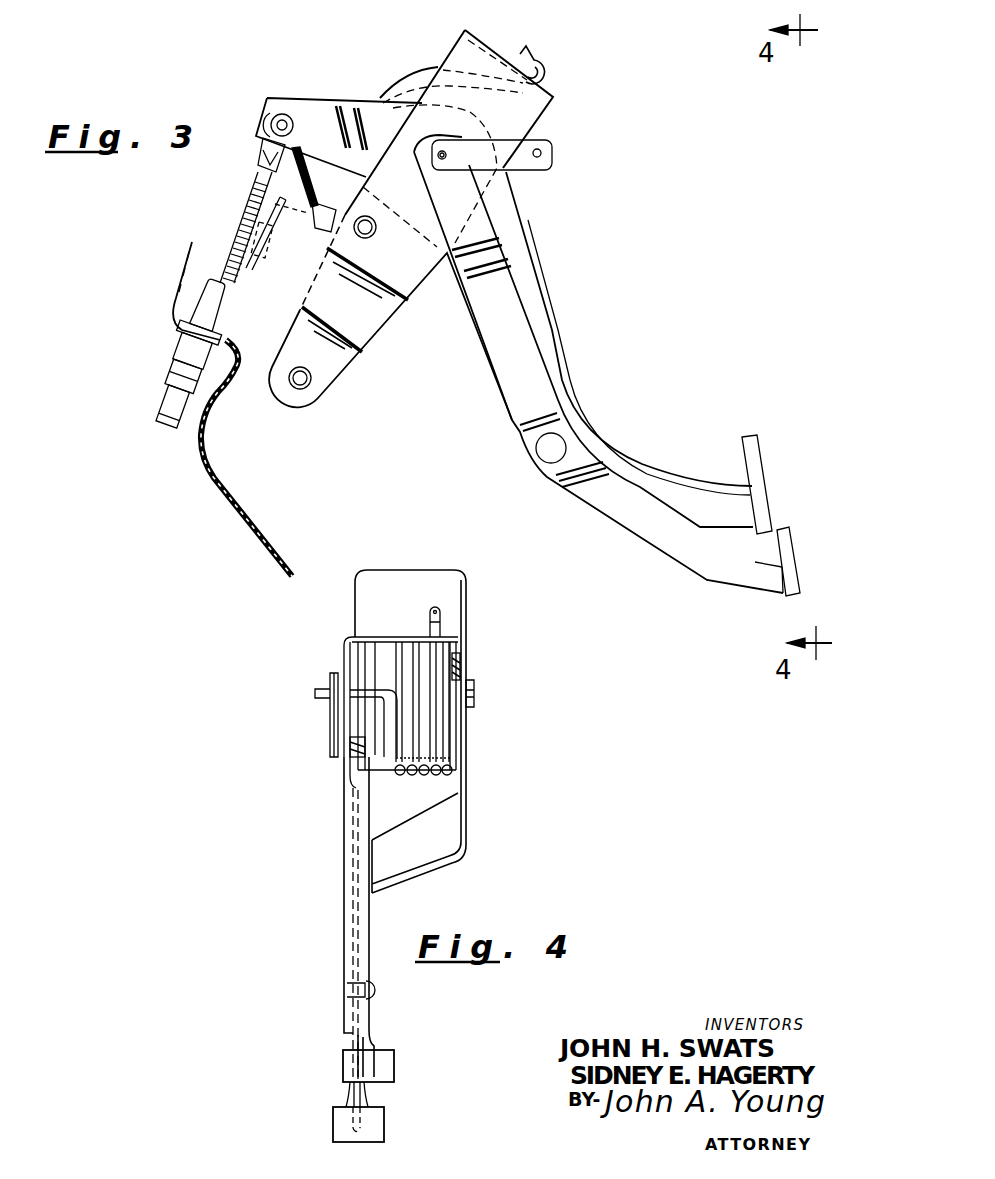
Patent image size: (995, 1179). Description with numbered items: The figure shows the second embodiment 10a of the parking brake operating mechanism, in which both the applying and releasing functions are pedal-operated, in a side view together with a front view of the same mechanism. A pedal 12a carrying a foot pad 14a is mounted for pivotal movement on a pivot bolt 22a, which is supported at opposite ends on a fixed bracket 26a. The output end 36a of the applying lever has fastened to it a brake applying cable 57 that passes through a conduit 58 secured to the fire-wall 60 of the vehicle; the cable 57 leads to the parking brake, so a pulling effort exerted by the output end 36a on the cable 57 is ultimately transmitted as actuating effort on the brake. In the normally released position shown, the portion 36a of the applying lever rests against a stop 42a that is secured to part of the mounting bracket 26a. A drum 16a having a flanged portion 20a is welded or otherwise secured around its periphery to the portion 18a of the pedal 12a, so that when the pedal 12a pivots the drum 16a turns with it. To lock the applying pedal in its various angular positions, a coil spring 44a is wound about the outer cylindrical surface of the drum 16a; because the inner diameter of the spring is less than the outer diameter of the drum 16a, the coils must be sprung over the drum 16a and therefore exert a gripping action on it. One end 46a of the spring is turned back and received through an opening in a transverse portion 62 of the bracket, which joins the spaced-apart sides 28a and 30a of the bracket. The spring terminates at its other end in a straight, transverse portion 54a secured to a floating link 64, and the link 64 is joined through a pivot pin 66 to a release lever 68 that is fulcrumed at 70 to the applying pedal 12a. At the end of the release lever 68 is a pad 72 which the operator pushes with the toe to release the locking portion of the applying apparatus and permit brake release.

In FIG. 3, the embodiment 10a is at (556, 295).
In FIG. 4, the embodiment 10a is at (334, 923).
In FIG. 3, the pedal 12a is at (565, 378).
In FIG. 4, the pedal 12a is at (347, 868).
In FIG. 3, the foot pad 14a is at (748, 437).
In FIG. 4, the foot pad 14a is at (347, 1061).
In FIG. 4, the drum 16a is at (383, 725).
In FIG. 4, the portion of the pedal 18a is at (365, 657).
In FIG. 4, the flanged portion 20a is at (373, 747).
In FIG. 4, the pivot bolt 22a is at (475, 693).
In FIG. 3, the fixed bracket 26a is at (410, 283).
In FIG. 4, the fixed bracket 26a is at (467, 805).
In FIG. 4, the side of the bracket 28a is at (353, 640).
In FIG. 4, the side of the bracket 30a is at (457, 657).
In FIG. 3, the output end of the applying lever 36a is at (310, 106).
In FIG. 3, the stop 42a is at (297, 180).
In FIG. 4, the coil spring 44a is at (427, 733).
In FIG. 3, the end of the spring 46a is at (531, 58).
In FIG. 4, the end of the spring 46a is at (441, 612).
In FIG. 4, the straight transverse portion 54a is at (350, 693).
In FIG. 3, the brake applying cable 57 is at (247, 207).
In FIG. 3, the conduit 58 is at (178, 373).
In FIG. 3, the fire-wall 60 is at (177, 300).
In FIG. 4, the transverse portion of the bracket 62 is at (372, 578).
In FIG. 3, the floating link 64 is at (548, 163).
In FIG. 4, the floating link 64 is at (328, 703).
In FIG. 3, the pivot pin 66 is at (440, 152).
In FIG. 3, the release lever 68 is at (487, 320).
In FIG. 3, the fulcrum 70 is at (558, 448).
In FIG. 3, the pad 72 is at (786, 538).
In FIG. 4, the pad 72 is at (338, 1123).